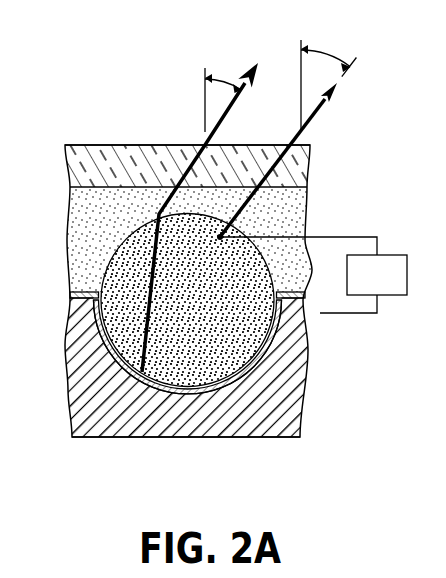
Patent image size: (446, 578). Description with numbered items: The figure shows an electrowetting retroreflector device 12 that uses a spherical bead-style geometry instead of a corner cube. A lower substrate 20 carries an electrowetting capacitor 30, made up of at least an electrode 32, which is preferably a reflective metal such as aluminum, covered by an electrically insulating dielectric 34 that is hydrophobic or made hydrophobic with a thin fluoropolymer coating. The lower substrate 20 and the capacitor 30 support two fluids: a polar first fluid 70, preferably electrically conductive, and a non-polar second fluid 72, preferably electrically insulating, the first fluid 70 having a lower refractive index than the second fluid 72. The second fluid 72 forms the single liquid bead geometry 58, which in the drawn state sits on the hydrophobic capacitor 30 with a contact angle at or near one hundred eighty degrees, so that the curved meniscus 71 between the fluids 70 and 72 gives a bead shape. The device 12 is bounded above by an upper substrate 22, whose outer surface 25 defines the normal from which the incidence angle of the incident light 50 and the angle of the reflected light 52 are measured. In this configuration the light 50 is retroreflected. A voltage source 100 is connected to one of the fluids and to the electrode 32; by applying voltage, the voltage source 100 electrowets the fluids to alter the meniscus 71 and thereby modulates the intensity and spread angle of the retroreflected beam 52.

The device 12 is at (98, 88).
The lower substrate 20 is at (75, 417).
The upper substrate 22 is at (70, 158).
The outer surface 25 is at (134, 144).
The electrowetting capacitor 30 is at (102, 352).
The electrode 32 is at (72, 298).
The dielectric 34 is at (70, 293).
The incident light 50 is at (224, 116).
The reflected light 52 is at (318, 108).
The bead geometry 58 is at (258, 368).
The first fluid 70 is at (72, 210).
The meniscus 71 is at (118, 250).
The second fluid 72 is at (124, 275).
The voltage source 100 is at (313, 275).